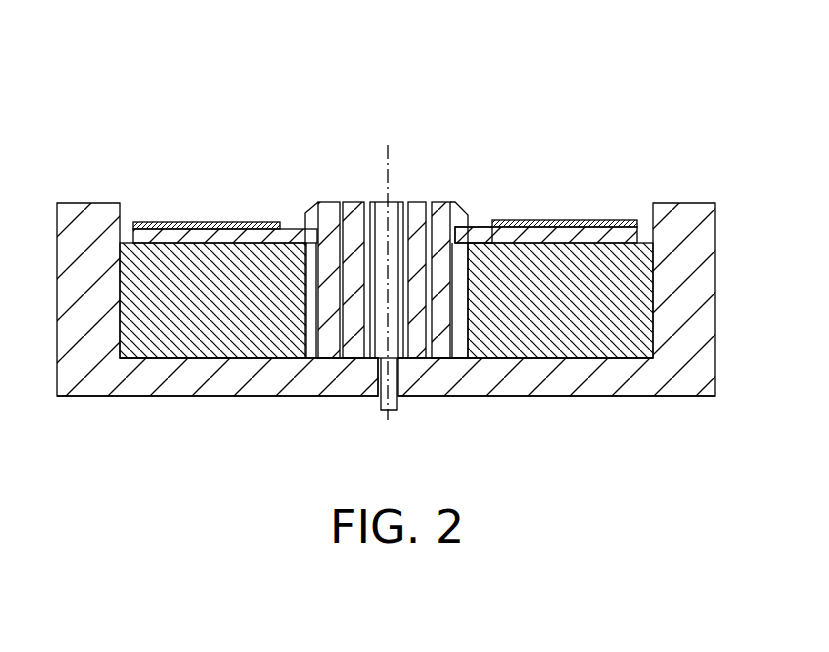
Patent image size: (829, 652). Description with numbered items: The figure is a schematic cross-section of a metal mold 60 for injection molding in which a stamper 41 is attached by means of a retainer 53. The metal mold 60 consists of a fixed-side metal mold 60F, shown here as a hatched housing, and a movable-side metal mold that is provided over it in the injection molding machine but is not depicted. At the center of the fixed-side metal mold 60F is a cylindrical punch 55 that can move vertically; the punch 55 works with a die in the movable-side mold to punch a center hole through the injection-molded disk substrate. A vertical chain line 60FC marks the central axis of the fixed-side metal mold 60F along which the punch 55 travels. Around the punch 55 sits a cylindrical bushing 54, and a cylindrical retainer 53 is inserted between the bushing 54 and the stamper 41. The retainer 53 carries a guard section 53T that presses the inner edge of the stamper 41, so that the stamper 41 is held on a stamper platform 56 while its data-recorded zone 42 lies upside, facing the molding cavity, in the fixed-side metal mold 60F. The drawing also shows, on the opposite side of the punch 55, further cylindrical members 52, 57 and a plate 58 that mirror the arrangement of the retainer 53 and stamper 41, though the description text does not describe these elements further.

The metal mold 60 is at (670, 43).
The fixed-side metal mold 60F is at (717, 161).
The center line of frame 60FC is at (386, 157).
The stamper platform 56 is at (525, 360).
The electrode plate 58 is at (300, 222).
The spacer 57 is at (341, 204).
The punch 55 is at (371, 203).
The bushing 54 is at (420, 203).
The retainer 53 is at (440, 203).
The guard section 53T is at (482, 222).
The spacer 52 is at (460, 203).
The data-recorded zone 42 is at (590, 221).
The stamper 41 is at (612, 240).